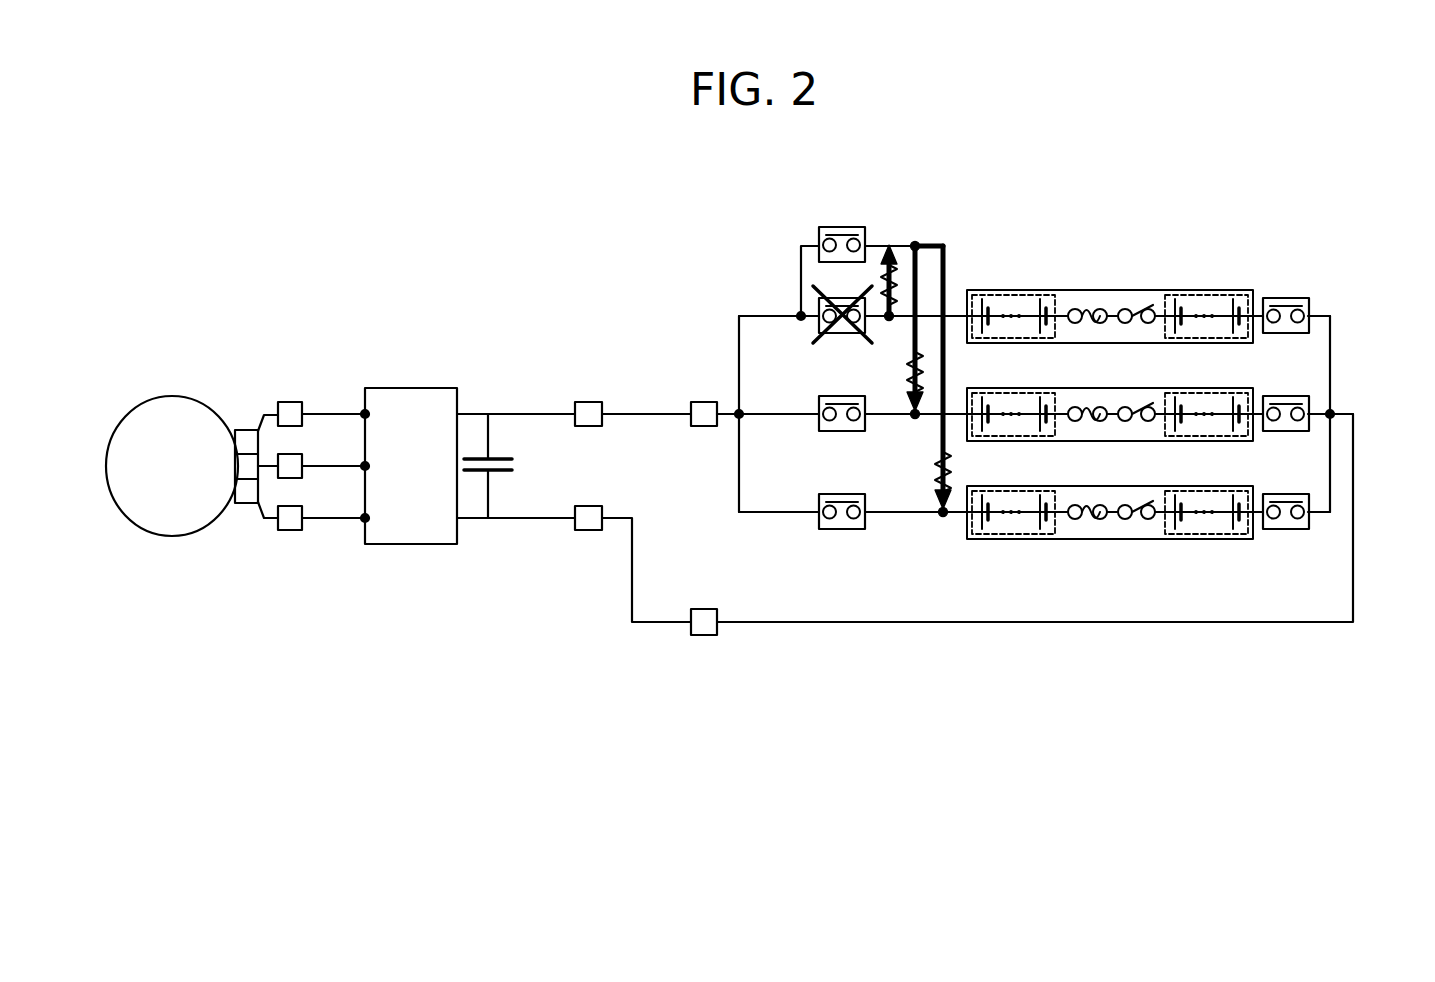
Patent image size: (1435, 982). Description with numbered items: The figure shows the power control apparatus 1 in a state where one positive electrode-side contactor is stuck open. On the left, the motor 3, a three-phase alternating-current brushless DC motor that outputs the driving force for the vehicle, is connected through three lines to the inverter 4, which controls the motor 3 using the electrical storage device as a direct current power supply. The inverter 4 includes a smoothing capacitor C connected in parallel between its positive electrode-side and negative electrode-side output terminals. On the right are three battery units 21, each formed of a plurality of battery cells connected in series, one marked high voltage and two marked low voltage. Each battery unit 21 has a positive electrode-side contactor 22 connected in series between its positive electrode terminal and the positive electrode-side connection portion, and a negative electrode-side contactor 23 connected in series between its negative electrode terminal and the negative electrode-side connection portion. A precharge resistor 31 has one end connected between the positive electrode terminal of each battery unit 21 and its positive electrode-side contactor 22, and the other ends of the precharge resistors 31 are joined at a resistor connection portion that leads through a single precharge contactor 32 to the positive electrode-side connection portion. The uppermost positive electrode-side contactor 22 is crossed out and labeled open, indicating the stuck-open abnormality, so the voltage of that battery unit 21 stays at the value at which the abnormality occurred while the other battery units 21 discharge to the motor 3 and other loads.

The power control apparatus 1 is at (1254, 227).
The motor 3 is at (174, 396).
The inverter 4 is at (413, 388).
The smoothing capacitor C is at (491, 472).
The battery unit 21 is at (1255, 290).
The positive electrode-side contactor 22 is at (819, 330).
The negative electrode-side contactor 23 is at (1292, 304).
The precharge resistor 31 is at (893, 285).
The precharge contactor 32 is at (838, 226).